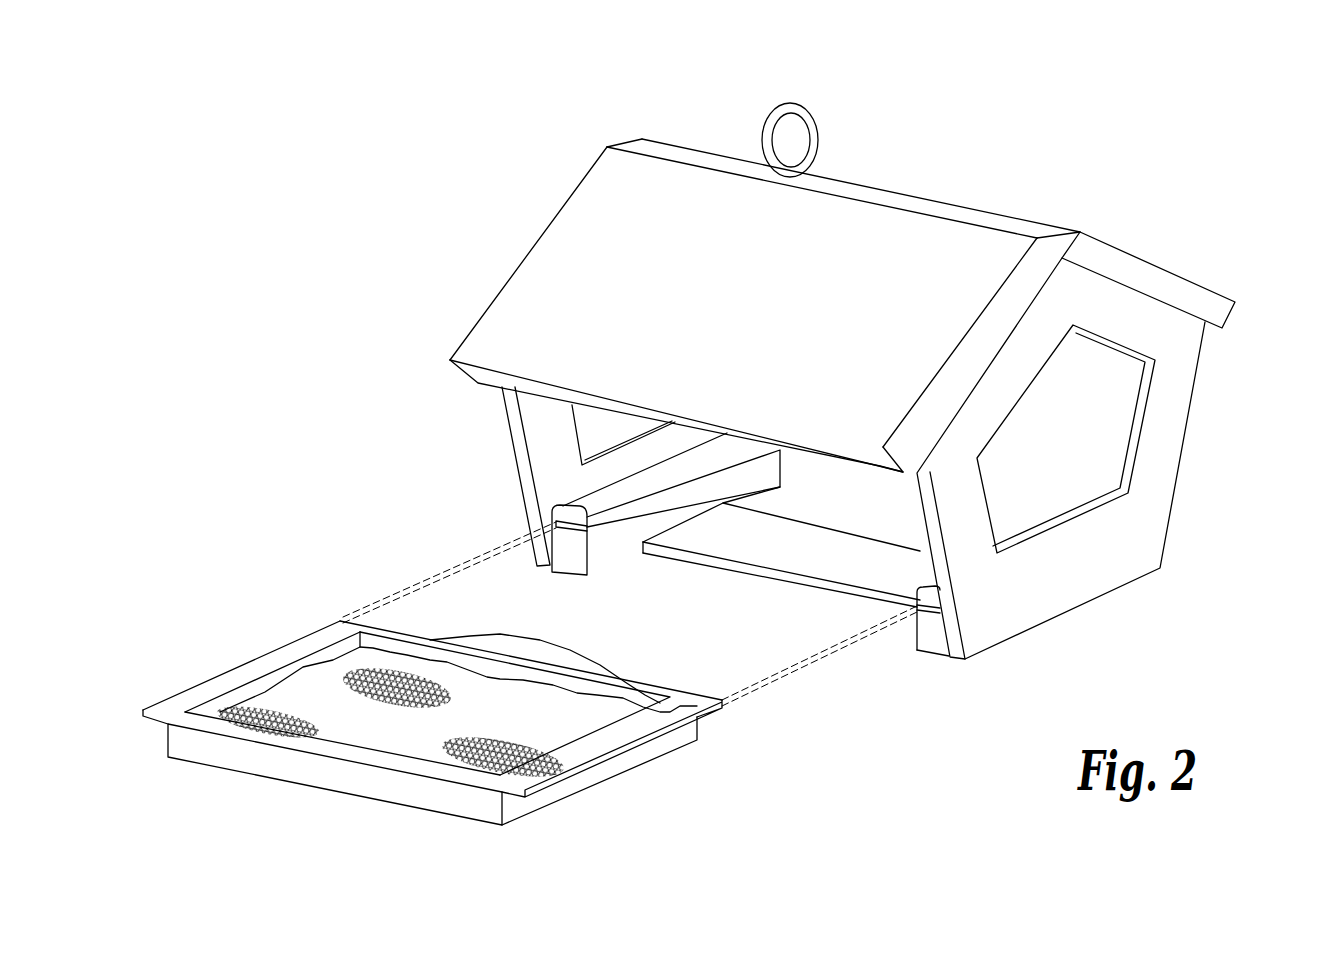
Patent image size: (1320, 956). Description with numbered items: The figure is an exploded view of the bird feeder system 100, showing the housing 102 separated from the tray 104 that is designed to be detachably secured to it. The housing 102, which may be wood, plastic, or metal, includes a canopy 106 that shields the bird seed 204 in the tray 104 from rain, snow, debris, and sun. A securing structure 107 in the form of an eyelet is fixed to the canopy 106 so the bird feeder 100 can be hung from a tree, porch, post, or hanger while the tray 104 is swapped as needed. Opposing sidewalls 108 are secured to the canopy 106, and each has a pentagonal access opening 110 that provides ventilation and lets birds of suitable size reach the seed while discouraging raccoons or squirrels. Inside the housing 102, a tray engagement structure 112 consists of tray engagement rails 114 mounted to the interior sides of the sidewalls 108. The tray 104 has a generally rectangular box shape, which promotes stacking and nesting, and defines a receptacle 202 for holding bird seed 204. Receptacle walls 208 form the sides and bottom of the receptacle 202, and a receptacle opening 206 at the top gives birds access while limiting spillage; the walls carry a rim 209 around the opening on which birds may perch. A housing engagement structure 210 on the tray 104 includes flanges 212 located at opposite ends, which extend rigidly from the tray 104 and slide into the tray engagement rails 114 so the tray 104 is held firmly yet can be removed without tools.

The bird feeder system 100 is at (902, 110).
The housing 102 is at (950, 212).
The tray 104 is at (263, 668).
The canopy 106 is at (1113, 248).
The securing structure 107 is at (795, 110).
The sidewall 108 is at (1162, 449).
The access opening 110 is at (1058, 476).
The tray engagement structure 112 is at (650, 577).
The tray engagement rail 114 is at (565, 560).
The receptacle 202 is at (315, 702).
The bird seed 204 is at (377, 733).
The receptacle opening 206 is at (586, 702).
The receptacle wall 208 is at (415, 790).
The rim 209 is at (440, 640).
The housing engagement structure 210 is at (716, 759).
The flange 212 is at (165, 710).